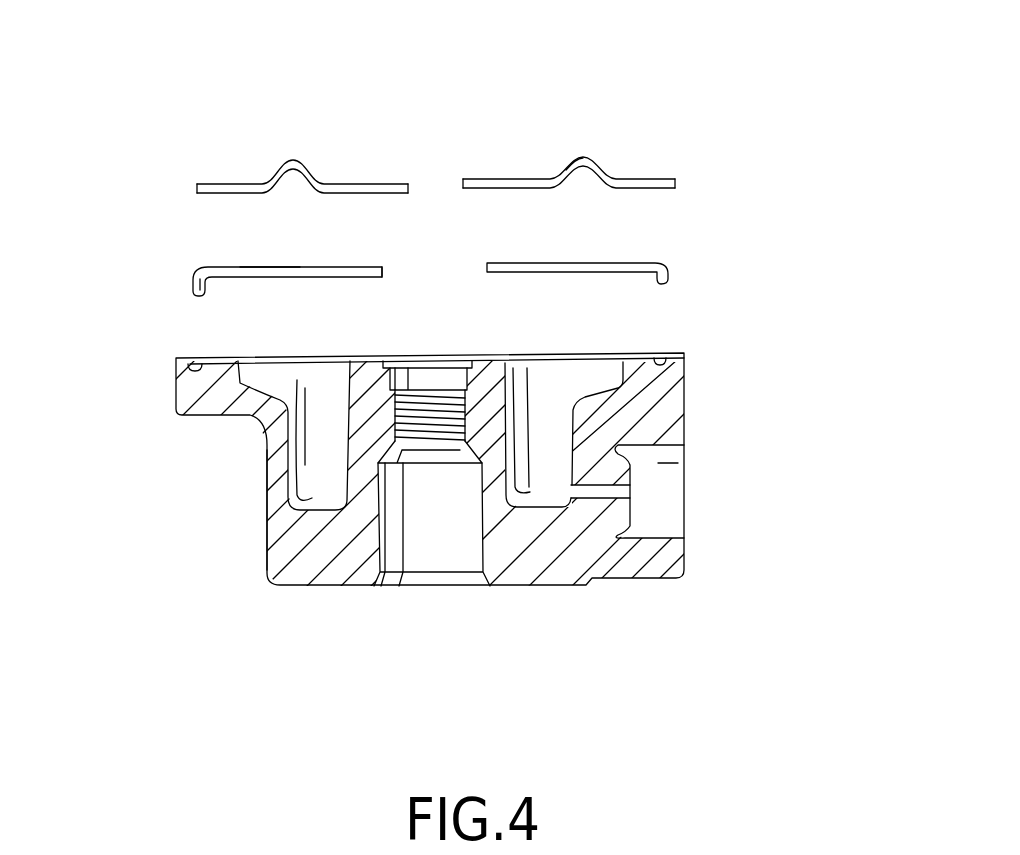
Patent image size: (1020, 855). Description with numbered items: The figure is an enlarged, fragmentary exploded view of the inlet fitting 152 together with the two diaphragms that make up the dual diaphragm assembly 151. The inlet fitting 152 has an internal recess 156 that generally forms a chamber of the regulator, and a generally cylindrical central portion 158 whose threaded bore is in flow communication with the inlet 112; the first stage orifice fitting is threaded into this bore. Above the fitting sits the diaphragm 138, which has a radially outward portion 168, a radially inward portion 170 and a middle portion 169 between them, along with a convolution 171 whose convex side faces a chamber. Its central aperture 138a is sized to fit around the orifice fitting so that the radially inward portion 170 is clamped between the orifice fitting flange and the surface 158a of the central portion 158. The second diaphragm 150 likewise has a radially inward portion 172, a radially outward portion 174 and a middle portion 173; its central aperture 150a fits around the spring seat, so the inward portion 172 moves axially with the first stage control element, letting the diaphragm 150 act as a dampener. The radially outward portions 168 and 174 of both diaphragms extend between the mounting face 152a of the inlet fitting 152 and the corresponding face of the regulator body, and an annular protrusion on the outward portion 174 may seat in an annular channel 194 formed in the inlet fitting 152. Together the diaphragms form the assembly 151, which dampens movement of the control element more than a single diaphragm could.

The inlet 112 is at (440, 583).
The diaphragm 138 is at (202, 183).
The central aperture 138a is at (408, 183).
The diaphragm 150 is at (212, 267).
The central aperture 150a is at (485, 268).
The dual diaphragm assembly 151 is at (449, 487).
The inlet fitting 152 is at (640, 580).
The mounting face 152a is at (683, 353).
The internal recess 156 is at (268, 543).
The central portion 158 is at (362, 427).
The surface 158a is at (497, 358).
The radially outward portion 168 is at (672, 178).
The middle portion 169 is at (512, 178).
The radially inward portion 170 is at (463, 179).
The convolution 171 is at (590, 158).
The radially inward portion 172 is at (377, 277).
The middle portion 173 is at (267, 267).
The radially outward portion 174 is at (193, 268).
The annular channel 194 is at (662, 355).